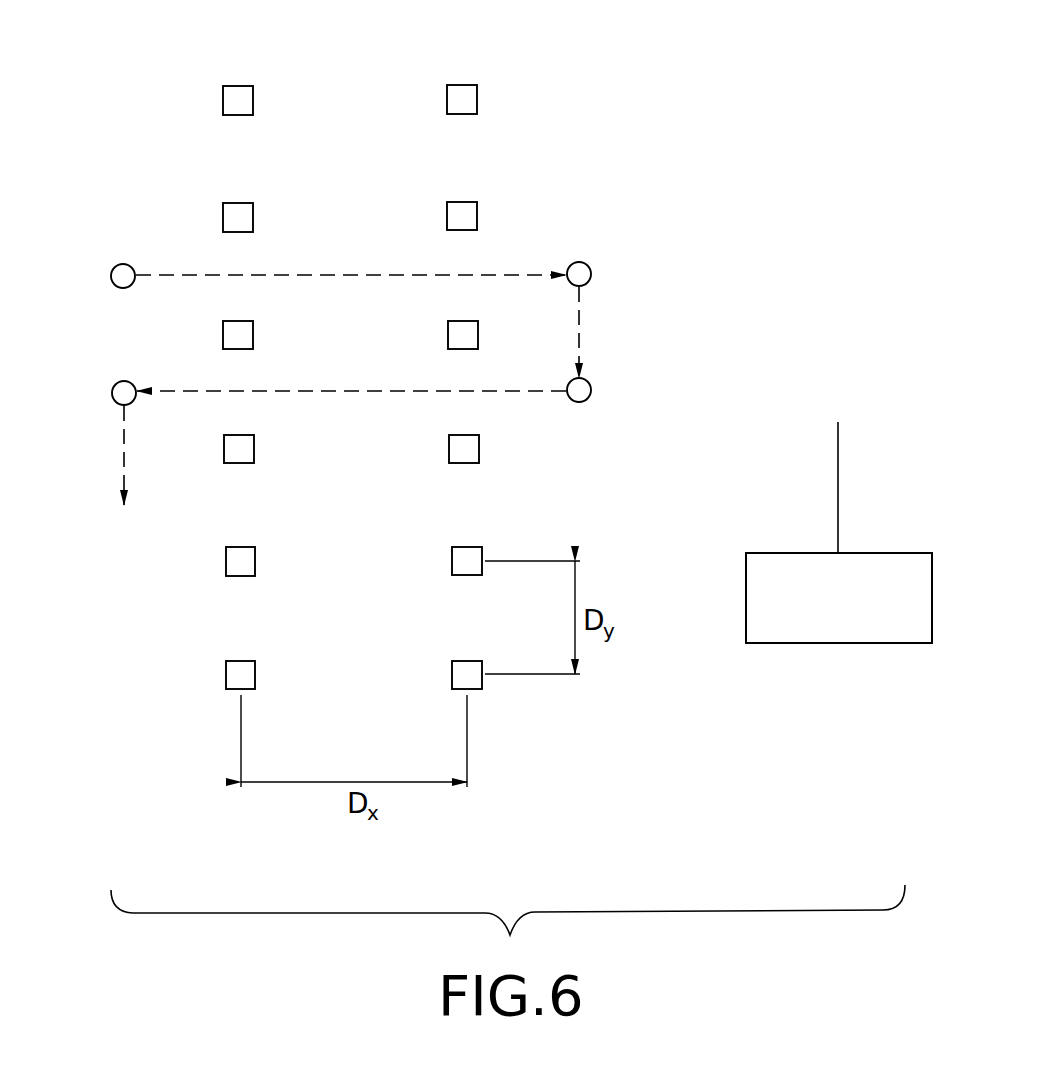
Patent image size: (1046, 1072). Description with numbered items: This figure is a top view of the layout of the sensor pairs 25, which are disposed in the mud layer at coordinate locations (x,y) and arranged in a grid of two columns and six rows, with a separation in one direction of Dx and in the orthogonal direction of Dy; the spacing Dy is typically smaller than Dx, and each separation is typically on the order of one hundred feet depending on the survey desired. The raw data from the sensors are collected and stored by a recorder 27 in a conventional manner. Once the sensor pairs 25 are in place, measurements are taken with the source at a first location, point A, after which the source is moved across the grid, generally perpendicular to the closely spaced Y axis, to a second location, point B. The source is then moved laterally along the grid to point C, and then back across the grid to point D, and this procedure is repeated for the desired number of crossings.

The sensor pairs 25 is at (478, 100).
The recorder 27 is at (839, 532).
The point A is at (116, 264).
The point B is at (591, 272).
The point C is at (591, 392).
The point D is at (117, 381).